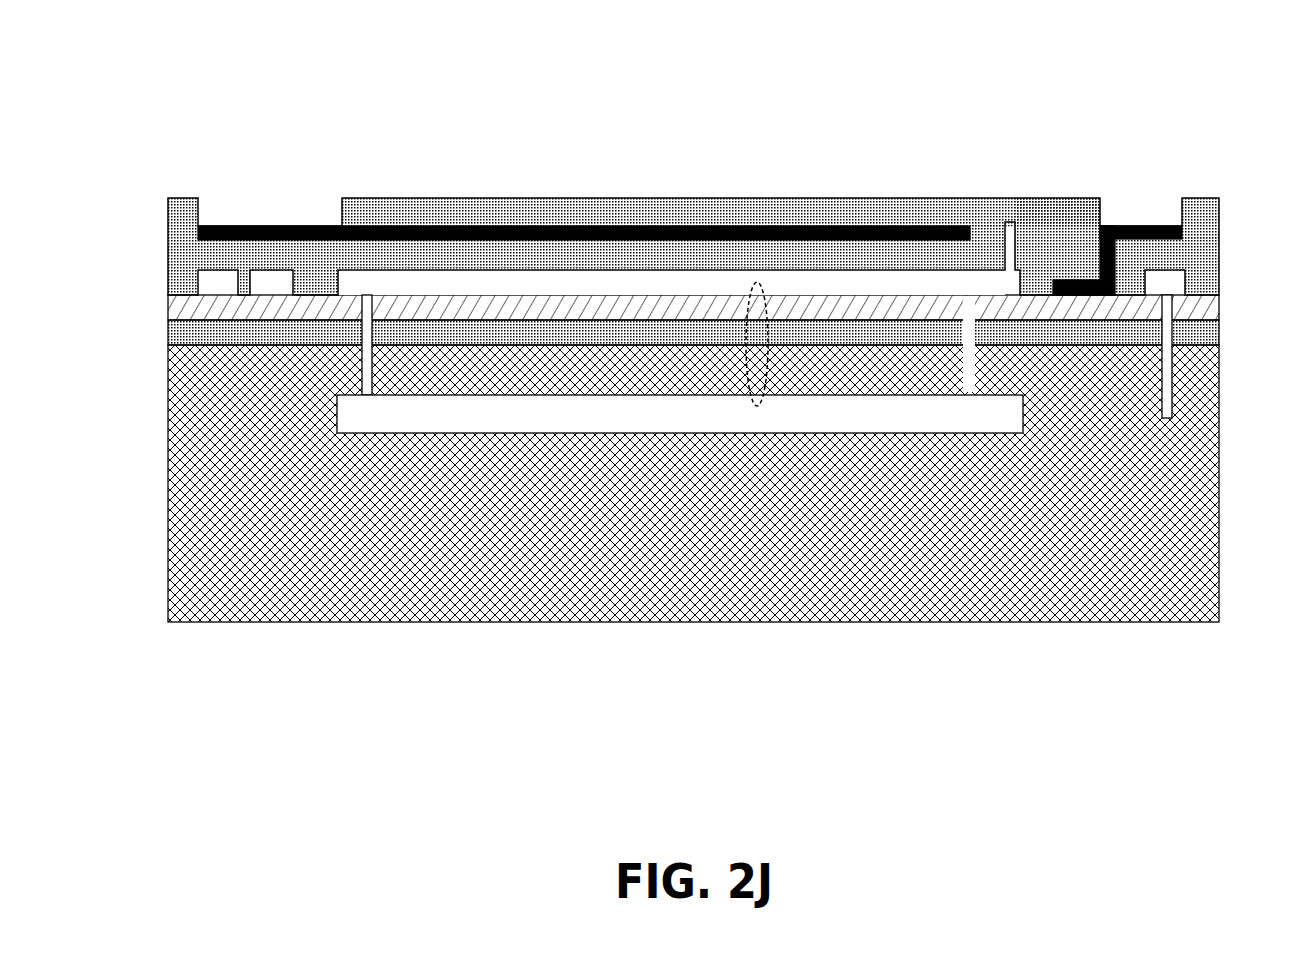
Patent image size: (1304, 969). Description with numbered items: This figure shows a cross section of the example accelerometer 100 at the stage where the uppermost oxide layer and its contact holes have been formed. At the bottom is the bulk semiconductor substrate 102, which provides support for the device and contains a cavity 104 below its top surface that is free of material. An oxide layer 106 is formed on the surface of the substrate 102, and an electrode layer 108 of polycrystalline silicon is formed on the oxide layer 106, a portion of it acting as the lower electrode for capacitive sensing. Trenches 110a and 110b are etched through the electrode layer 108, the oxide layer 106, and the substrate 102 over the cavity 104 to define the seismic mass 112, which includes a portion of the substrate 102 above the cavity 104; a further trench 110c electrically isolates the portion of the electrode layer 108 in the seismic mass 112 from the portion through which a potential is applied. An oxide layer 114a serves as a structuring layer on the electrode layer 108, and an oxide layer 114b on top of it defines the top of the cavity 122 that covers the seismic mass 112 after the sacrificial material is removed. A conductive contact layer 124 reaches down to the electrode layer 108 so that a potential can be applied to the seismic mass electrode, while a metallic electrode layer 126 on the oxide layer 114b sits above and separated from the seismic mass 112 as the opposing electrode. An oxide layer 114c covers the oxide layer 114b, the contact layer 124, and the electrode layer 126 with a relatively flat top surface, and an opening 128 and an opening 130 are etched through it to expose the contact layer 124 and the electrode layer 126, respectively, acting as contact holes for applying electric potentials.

The accelerometer 100 is at (232, 66).
The substrate 102 is at (675, 534).
The cavity 104 is at (675, 426).
The oxide layer 106 is at (1215, 325).
The electrode layer 108 is at (1215, 303).
The trench 110a is at (373, 365).
The trench 110b is at (967, 366).
The trench 110c is at (1165, 412).
The seismic mass 112 is at (755, 408).
The oxide layer 114a is at (1215, 274).
The oxide layer 114b is at (1215, 252).
The oxide layer 114c is at (1215, 209).
The cavity 122 is at (675, 294).
The contact layer 124 is at (1148, 226).
The electrode layer 126 is at (419, 232).
The opening 128 is at (1114, 212).
The opening 130 is at (298, 209).